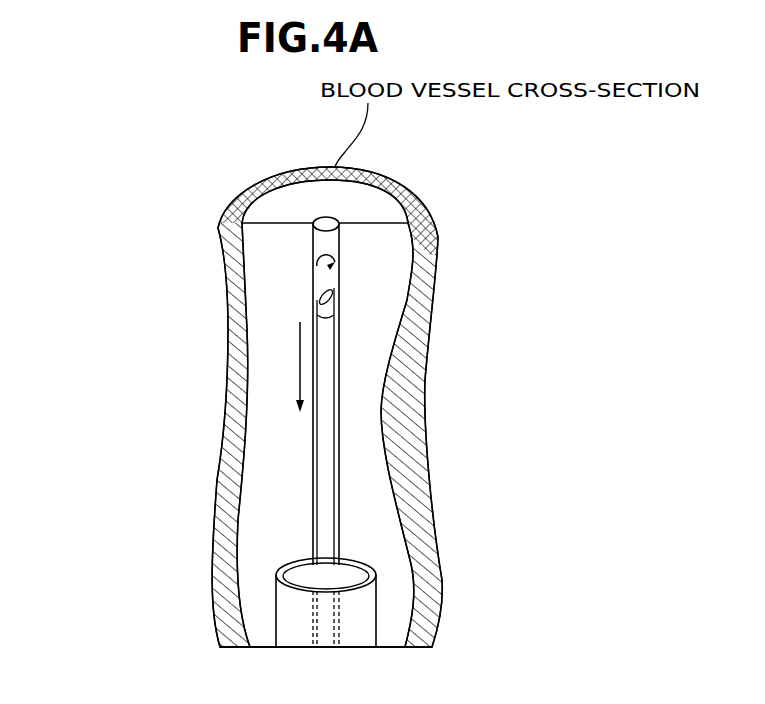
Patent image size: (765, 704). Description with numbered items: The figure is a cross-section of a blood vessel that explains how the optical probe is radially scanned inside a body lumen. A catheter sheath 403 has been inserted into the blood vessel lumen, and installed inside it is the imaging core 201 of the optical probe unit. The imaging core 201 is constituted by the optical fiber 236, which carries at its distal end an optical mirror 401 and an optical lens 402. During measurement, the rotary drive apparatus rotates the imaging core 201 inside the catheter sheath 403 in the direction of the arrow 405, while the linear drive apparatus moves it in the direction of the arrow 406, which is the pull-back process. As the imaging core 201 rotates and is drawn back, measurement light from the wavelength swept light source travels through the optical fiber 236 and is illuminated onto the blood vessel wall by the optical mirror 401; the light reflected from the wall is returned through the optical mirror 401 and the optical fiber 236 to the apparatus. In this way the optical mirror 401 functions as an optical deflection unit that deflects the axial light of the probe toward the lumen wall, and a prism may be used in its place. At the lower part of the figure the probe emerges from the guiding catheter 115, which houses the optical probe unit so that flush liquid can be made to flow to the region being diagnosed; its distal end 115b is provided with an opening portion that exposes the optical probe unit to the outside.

The imaging core 201 is at (122, 218).
The optical fiber 236 is at (325, 495).
The optical mirror 401 is at (323, 292).
The optical lens 402 is at (326, 309).
The catheter sheath 403 is at (318, 218).
The arrow 405 is at (336, 252).
The arrow 406 is at (303, 367).
The guiding catheter 115 is at (363, 618).
The distal end 115b is at (373, 568).